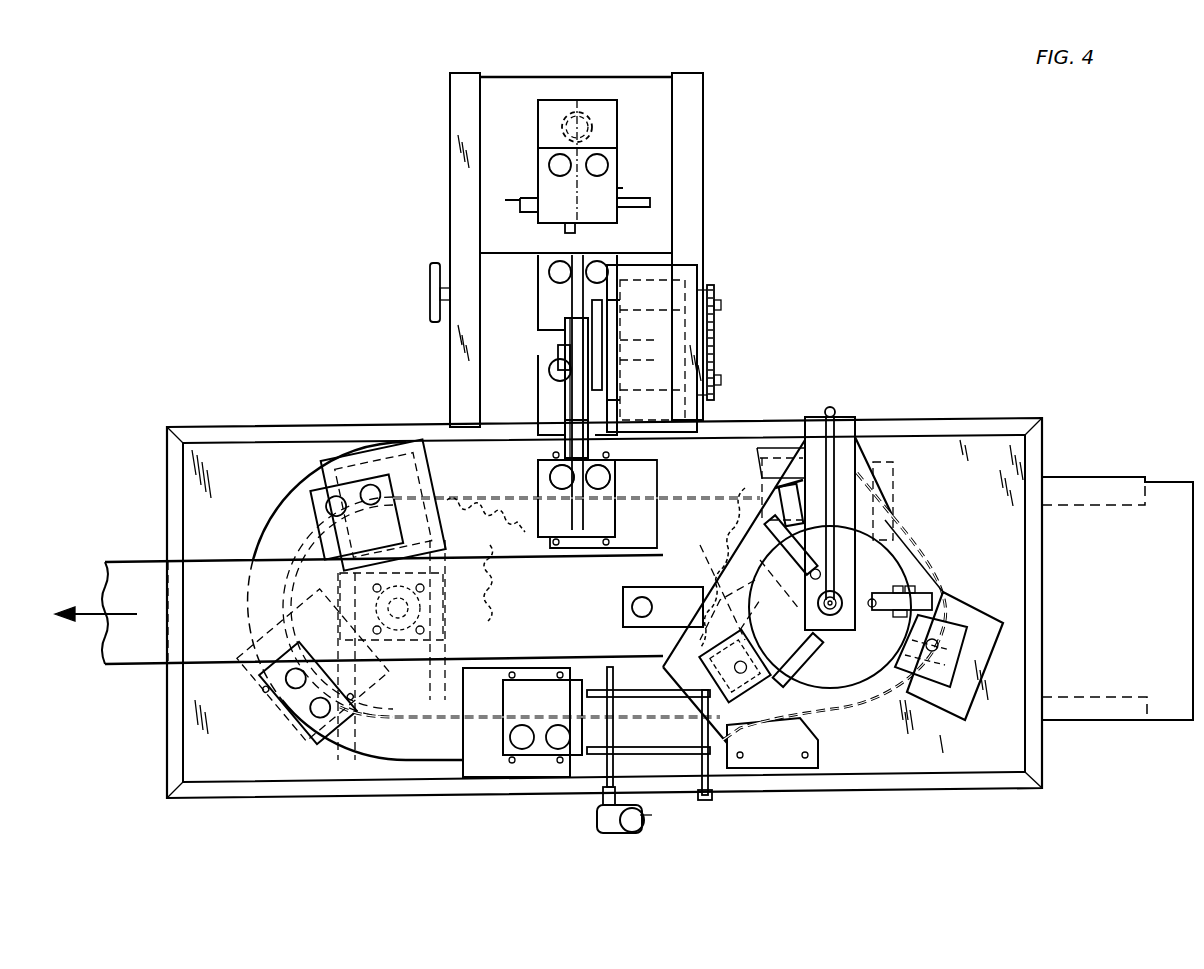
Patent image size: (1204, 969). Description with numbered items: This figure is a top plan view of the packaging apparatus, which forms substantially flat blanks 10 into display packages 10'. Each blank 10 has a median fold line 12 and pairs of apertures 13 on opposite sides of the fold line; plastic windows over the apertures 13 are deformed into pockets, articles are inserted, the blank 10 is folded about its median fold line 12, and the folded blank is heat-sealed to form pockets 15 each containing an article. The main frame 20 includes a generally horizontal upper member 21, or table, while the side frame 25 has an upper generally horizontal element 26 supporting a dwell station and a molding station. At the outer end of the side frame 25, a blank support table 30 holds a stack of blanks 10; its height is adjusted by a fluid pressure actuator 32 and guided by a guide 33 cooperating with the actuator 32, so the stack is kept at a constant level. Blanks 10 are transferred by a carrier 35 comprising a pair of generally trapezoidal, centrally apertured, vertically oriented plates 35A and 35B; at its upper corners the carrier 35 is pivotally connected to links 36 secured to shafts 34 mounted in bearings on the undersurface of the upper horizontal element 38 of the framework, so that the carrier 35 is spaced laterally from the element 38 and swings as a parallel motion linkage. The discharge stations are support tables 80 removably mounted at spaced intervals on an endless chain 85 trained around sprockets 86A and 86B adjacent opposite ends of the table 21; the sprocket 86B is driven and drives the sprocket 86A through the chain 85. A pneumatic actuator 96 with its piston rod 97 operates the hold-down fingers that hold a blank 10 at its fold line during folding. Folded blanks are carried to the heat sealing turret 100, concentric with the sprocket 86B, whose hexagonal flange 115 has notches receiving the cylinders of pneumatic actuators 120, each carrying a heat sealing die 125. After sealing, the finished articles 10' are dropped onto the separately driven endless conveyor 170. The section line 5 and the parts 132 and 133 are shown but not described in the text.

The section line 5- 5 is at (575, 36).
The blank 10 is at (473, 492).
The display package 10' is at (663, 594).
The median fold line 12 is at (540, 178).
The apertures 13 is at (552, 480).
The pockets 15 is at (638, 608).
The main frame 20 is at (1003, 410).
The upper member 21 is at (1010, 458).
The side frame 25 is at (432, 345).
The upper horizontal element 26 is at (465, 365).
The blank support table 30 is at (610, 136).
The fluid pressure actuator 32 is at (583, 113).
The guide 33 is at (580, 230).
The shafts 34 is at (716, 290).
The carrier 35 is at (550, 395).
The plate 35A is at (565, 340).
The plate 35B is at (588, 343).
The links 36 is at (600, 292).
The upper horizontal element 38 is at (692, 270).
The support tables 80 is at (402, 440).
The endless chain 85 is at (413, 723).
The sprocket 86A is at (510, 548).
The sprocket 86B is at (745, 500).
The pneumatic actuator 96 is at (610, 832).
The piston rod 97 is at (638, 822).
The heat sealing turret 100 is at (960, 510).
The hexagonal flange 115 is at (907, 558).
The pneumatic actuator 120 is at (955, 650).
The heat sealing die 125 is at (952, 710).
The vertical post 132 is at (810, 420).
The post actuating rod 133 is at (838, 440).
The endless conveyor 170 is at (146, 547).